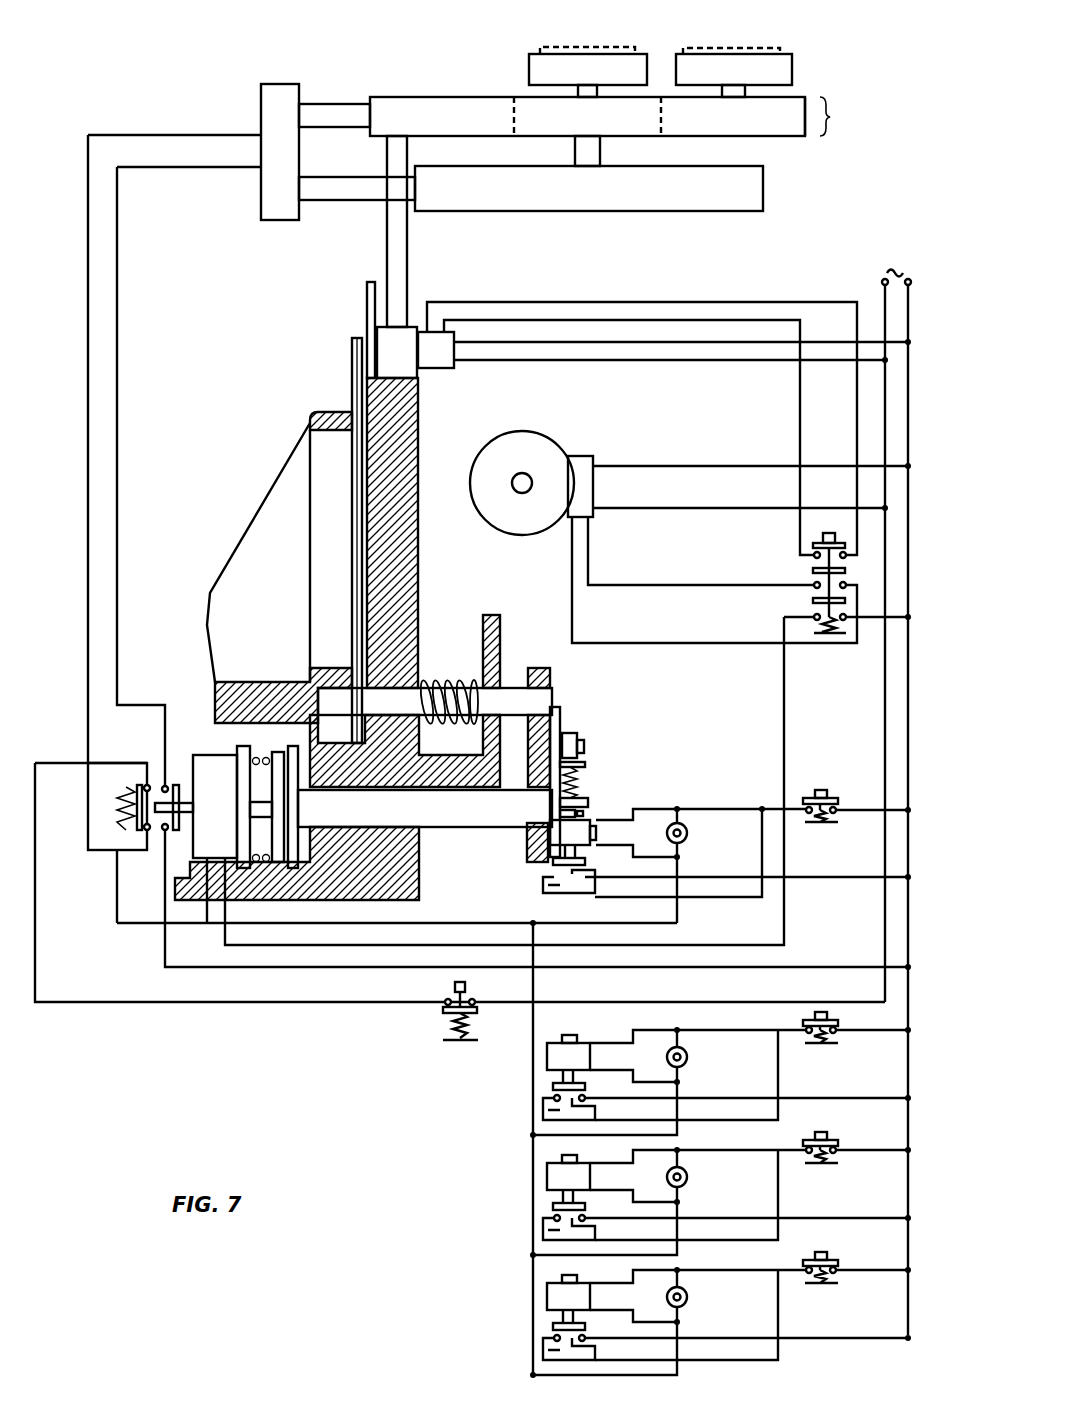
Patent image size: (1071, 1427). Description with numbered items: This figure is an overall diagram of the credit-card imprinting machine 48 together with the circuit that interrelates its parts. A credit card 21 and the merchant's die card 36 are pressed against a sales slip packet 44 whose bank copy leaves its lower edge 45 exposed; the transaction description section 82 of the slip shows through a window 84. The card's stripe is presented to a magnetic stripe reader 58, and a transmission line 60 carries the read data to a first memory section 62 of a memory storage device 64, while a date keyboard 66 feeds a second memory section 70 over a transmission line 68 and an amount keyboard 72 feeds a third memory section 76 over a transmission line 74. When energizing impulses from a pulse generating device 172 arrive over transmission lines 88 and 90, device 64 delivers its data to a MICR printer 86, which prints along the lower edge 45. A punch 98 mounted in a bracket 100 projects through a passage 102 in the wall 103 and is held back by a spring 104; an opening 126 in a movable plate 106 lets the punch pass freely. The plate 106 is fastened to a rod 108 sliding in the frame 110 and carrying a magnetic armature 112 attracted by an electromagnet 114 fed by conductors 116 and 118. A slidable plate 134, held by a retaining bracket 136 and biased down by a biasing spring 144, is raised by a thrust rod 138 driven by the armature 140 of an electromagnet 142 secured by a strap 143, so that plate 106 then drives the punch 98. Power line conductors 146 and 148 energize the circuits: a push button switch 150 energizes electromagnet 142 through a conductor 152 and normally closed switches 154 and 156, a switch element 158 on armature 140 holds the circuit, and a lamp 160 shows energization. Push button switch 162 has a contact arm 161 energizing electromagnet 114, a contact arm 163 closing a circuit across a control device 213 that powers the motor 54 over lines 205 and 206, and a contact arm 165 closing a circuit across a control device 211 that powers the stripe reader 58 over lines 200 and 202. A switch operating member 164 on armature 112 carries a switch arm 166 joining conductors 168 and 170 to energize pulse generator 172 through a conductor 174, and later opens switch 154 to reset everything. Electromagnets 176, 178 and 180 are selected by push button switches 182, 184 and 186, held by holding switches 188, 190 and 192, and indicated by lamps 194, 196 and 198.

The credit card 21 is at (367, 293).
The merchant's die card 36 is at (372, 550).
The sales slip packet 44 is at (352, 382).
The lower edge of bank copy 45 is at (322, 702).
The machine 48 is at (426, 578).
The motor 54 is at (548, 440).
The magnetic stripe reader 58 is at (410, 358).
The transmission line 60 is at (408, 258).
The first memory section 62 is at (450, 97).
The memory storage device 64 is at (838, 116).
The date keyboard 66 is at (590, 50).
The transmission line 68 is at (587, 116).
The second memory section 70 is at (643, 137).
The keyboard 72 is at (768, 44).
The transmission line 74 is at (745, 95).
The third memory section 76 is at (790, 137).
The transaction description section 82 is at (352, 588).
The window 84 is at (322, 472).
The MICR printer 86 is at (763, 205).
The transmission line 88 is at (328, 112).
The transmission line 90 is at (343, 203).
The punch 98 is at (562, 707).
The bracket 100 is at (500, 662).
The passage 102 is at (390, 688).
The wall 103 is at (420, 520).
The spring 104 is at (428, 690).
The movable plate 106 is at (527, 840).
The rod 108 is at (482, 810).
The frame 110 is at (410, 891).
The magnetic armature 112 is at (300, 760).
The electromagnet 114 is at (210, 755).
The conductor 116 is at (207, 905).
The conductor 118 is at (784, 713).
The opening 126 is at (552, 688).
The slidable plate 134 is at (563, 718).
The retaining bracket 136 is at (584, 748).
The thrust rod 138 is at (588, 806).
The armature 140 is at (727, 890).
The electromagnet 142 is at (577, 840).
The strap 143 is at (597, 832).
The biasing spring 144 is at (580, 782).
The power line conductor 146 is at (908, 395).
The power line conductor 148 is at (882, 298).
The push button switch 150 is at (830, 792).
The conductor 152 is at (684, 915).
The switch 154 is at (125, 832).
The switch 156 is at (465, 993).
The switch element 158 is at (565, 888).
The lamp 160 is at (688, 833).
The contact arm 161 is at (813, 600).
The push button switch 162 is at (835, 535).
The contact arm 163 is at (813, 571).
The switch operating member 164 is at (165, 835).
The contact arm 165 is at (813, 545).
The switch arm 166 is at (168, 768).
The conductor 168 is at (185, 1002).
The conductor 170 is at (118, 660).
The pulse generating device 172 is at (261, 108).
The conductor 174 is at (88, 515).
The electromagnet 176 is at (548, 1043).
The electromagnet 178 is at (547, 1173).
The electromagnet 180 is at (547, 1294).
The push button switch 182 is at (838, 1022).
The push button switch 184 is at (836, 1143).
The push button switch 186 is at (835, 1260).
The holding switch 188 is at (555, 1115).
The holding switch 190 is at (555, 1240).
The holding switch 192 is at (555, 1352).
The indicator lamp 194 is at (687, 1057).
The indicator lamp 196 is at (690, 1179).
The indicator lamp 198 is at (690, 1297).
The line 200 is at (690, 343).
The line 202 is at (762, 361).
The line 205 is at (670, 466).
The line 206 is at (667, 509).
The control device 211 is at (448, 368).
The control device 213 is at (596, 490).